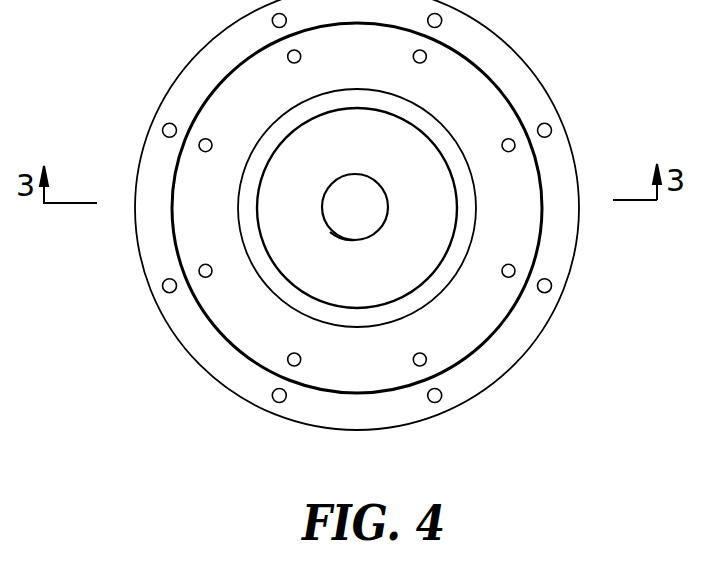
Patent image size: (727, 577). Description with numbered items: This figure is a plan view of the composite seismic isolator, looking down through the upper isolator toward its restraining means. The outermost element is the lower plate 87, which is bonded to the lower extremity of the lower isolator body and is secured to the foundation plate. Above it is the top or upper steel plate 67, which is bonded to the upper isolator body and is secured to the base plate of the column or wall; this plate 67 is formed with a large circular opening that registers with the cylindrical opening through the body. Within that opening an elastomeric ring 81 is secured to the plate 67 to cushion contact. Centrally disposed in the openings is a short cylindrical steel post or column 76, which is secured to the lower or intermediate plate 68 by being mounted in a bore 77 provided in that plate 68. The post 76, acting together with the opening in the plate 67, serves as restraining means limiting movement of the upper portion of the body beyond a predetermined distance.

The lower plate 87 is at (567, 241).
The top or upper steel plate 67 is at (487, 313).
The elastomeric ring 81 is at (421, 300).
The lower or intermediate plate 68 is at (366, 165).
The cylindrical steel post or column 76 is at (364, 232).
The bore 77 is at (340, 238).